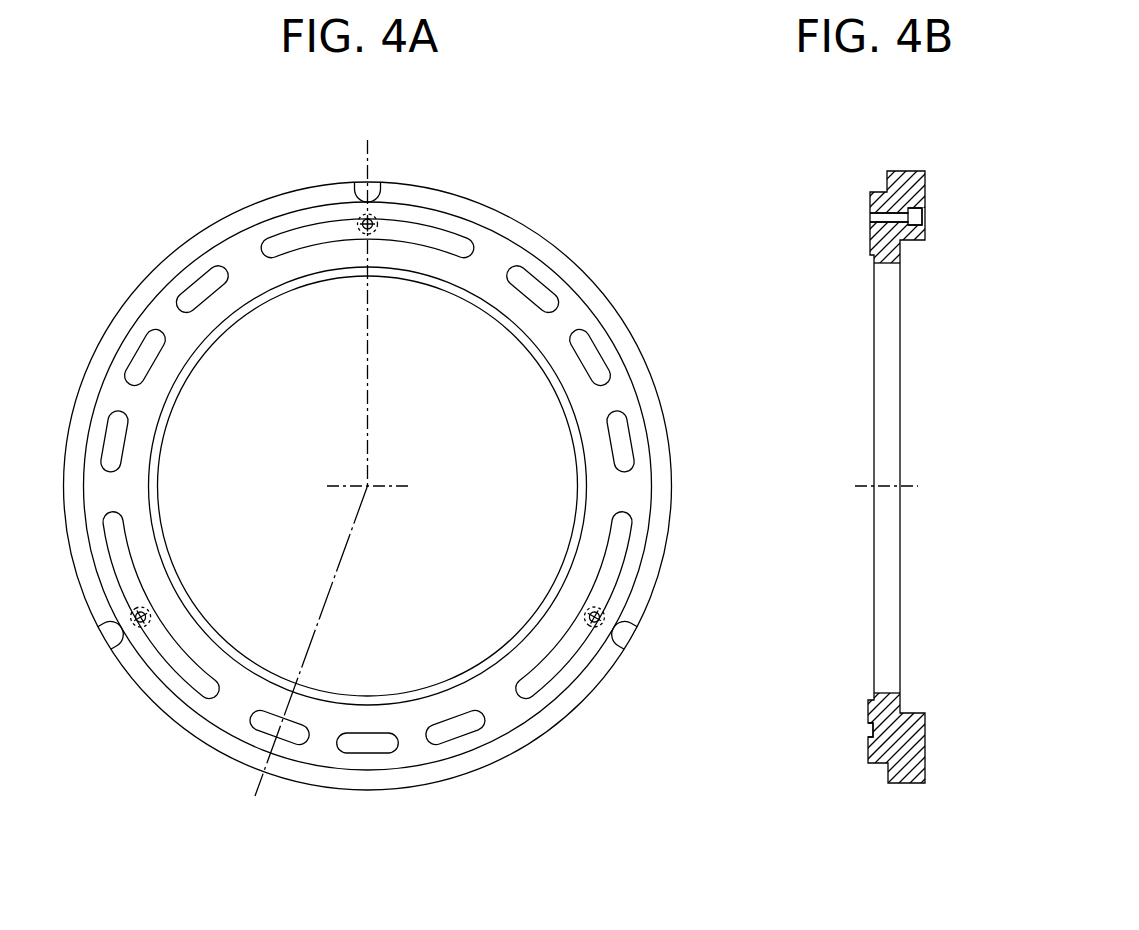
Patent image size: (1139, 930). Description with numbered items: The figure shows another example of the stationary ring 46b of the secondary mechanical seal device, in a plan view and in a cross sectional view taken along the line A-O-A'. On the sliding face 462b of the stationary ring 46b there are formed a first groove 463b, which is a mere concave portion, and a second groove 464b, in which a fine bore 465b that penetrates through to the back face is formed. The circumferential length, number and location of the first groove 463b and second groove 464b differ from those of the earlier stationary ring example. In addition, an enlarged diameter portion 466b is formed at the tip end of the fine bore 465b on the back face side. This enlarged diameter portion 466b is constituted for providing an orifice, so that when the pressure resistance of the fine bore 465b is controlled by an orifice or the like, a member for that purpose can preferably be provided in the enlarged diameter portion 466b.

In FIG. 4A, the stationary ring 46b is at (419, 477).
In FIG. 4B, the stationary ring 46b is at (693, 480).
In FIG. 4A, the sliding face 462b is at (482, 278).
In FIG. 4B, the sliding face 462b is at (868, 712).
In FIG. 4A, the first groove 463b is at (597, 355).
In FIG. 4B, the first groove 463b is at (868, 738).
In FIG. 4A, the second groove 464b is at (453, 237).
In FIG. 4B, the second groove 464b is at (870, 217).
In FIG. 4A, the fine bore 465b is at (375, 214).
In FIG. 4B, the fine bore 465b is at (902, 247).
In FIG. 4B, the enlarged diameter portion 466b is at (925, 215).